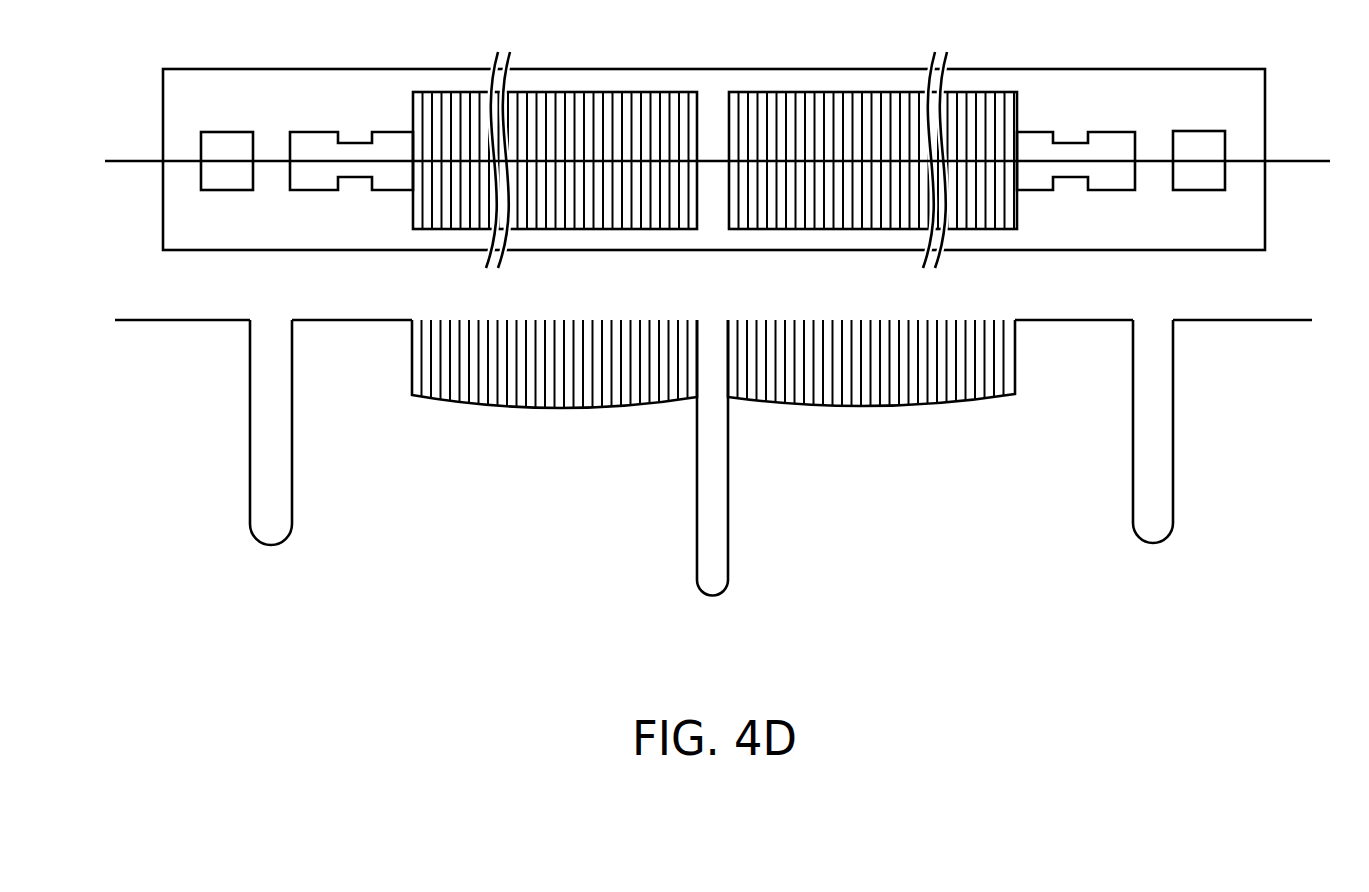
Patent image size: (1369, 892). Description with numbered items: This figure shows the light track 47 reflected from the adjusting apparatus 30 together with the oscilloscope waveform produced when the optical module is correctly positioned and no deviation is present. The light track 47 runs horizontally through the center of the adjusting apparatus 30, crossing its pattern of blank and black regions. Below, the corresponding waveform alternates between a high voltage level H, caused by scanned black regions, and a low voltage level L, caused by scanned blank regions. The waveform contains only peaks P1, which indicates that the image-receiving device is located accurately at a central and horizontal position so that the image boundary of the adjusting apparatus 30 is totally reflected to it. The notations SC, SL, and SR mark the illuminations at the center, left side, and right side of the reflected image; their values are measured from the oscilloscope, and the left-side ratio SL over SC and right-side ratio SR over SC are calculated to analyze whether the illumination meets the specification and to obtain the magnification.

The adjusting apparatus 30 is at (748, 69).
The light track 47 is at (737, 157).
The high voltage level H is at (735, 326).
The low voltage level L is at (1341, 522).
The left-side illumination SL is at (284, 589).
The center illumination SC is at (731, 641).
The right-side illumination SR is at (1171, 590).
The peak P1 is at (251, 450).